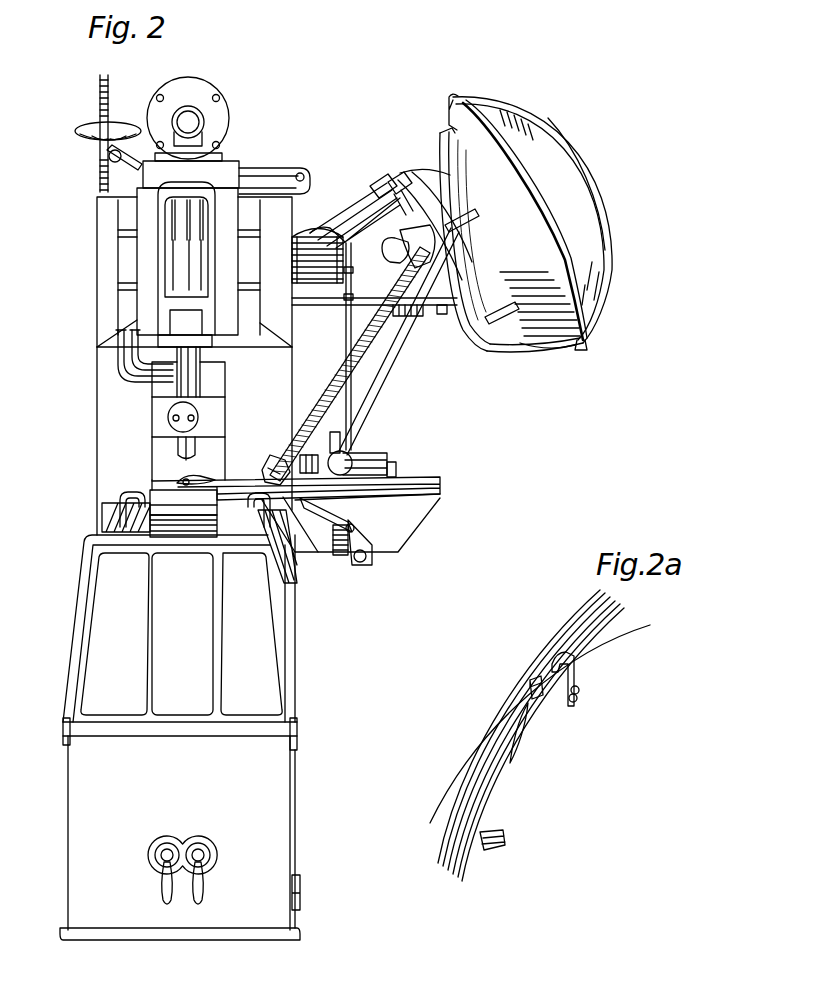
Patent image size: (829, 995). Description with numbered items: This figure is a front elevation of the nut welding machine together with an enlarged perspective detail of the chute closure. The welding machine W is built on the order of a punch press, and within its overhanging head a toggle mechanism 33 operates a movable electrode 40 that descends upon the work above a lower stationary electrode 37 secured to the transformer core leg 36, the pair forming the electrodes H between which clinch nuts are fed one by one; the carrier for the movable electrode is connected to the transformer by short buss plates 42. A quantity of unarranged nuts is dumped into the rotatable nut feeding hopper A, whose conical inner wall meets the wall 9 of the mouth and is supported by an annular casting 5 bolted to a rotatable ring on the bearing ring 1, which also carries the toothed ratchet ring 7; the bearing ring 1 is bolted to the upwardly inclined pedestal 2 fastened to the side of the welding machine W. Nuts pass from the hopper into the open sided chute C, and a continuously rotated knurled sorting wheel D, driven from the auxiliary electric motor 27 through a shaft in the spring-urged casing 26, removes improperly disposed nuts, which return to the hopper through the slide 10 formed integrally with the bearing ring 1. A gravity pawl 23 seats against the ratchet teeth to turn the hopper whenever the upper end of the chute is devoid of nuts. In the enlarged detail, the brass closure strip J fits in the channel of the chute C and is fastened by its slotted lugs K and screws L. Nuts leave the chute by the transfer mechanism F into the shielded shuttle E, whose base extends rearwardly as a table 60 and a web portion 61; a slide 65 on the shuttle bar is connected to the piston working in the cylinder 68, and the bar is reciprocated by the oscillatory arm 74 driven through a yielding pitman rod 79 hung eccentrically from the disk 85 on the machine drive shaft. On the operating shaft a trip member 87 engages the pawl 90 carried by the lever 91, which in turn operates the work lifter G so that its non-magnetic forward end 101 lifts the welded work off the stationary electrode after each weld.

In FIG. 2, the auxiliary electric motor 27 is at (222, 118).
In FIG. 2, the toggle mechanism 33 is at (172, 232).
In FIG. 2, the buss plates 42 is at (224, 379).
In FIG. 2, the disk 85 is at (333, 232).
In FIG. 2, the casing 26 is at (352, 228).
In FIG. 2, the gravity pawl 23 is at (385, 178).
In FIG. 2, the bracket B is at (396, 176).
In FIG. 2, the nut feeding hopper A is at (555, 178).
In FIG. 2, the wall of the mouth 9 is at (593, 240).
In FIG. 2, the slide 10 is at (432, 260).
In FIG. 2, the sorting wheel D is at (388, 260).
In FIG. 2, the pitman rod 79 is at (346, 328).
In FIG. 2, the chute C is at (372, 328).
In FIG. 2A, the chute C is at (541, 737).
In FIG. 2, the bearing ring 1 is at (468, 330).
In FIG. 2, the ratchet ring 7 is at (480, 346).
In FIG. 2, the annular casting 5 is at (530, 348).
In FIG. 2, the pedestal 2 is at (373, 382).
In FIG. 2, the electrodes H is at (182, 448).
In FIG. 2, the work lifter G is at (183, 478).
In FIG. 2, the shuttle E is at (223, 481).
In FIG. 2, the transfer mechanism F is at (264, 456).
In FIG. 2, the forward end of work lifting lever 101 is at (152, 480).
In FIG. 2, the cylinder 68 is at (378, 458).
In FIG. 2, the slide 65 is at (398, 473).
In FIG. 2, the table 60 is at (432, 490).
In FIG. 2, the oscillatory arm 74 is at (338, 510).
In FIG. 2, the web portion 61 is at (398, 530).
In FIG. 2, the lower stationary electrode 37 is at (155, 505).
In FIG. 2, the core leg 36 is at (189, 527).
In FIG. 2, the movable electrode 40 is at (240, 500).
In FIG. 2, the lever 91 is at (324, 556).
In FIG. 2, the pawl 90 is at (358, 563).
In FIG. 2, the trip member 87 is at (365, 562).
In FIG. 2, the welding machine W is at (285, 788).
In FIG. 2A, the closure strip J is at (580, 647).
In FIG. 2A, the slotted lugs K is at (576, 672).
In FIG. 2A, the screws L is at (578, 695).